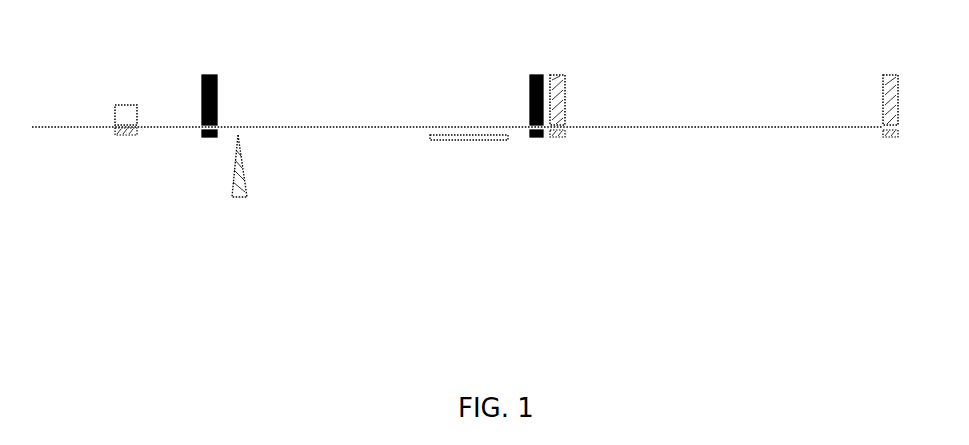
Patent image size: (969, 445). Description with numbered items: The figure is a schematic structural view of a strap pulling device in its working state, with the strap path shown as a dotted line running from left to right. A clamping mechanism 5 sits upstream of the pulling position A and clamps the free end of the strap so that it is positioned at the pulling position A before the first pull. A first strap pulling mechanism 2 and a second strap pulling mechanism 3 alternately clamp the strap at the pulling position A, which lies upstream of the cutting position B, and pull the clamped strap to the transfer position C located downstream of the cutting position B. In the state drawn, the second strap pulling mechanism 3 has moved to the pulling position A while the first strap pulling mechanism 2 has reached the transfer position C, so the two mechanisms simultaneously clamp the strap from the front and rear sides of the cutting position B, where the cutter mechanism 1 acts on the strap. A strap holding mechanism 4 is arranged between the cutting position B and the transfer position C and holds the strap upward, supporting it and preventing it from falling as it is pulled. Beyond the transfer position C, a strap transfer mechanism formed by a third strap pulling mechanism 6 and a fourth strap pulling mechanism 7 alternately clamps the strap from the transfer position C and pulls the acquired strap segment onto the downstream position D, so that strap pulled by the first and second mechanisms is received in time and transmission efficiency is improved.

The cutter mechanism 1 is at (232, 197).
The first strap pulling mechanism 2 is at (530, 82).
The second strap pulling mechanism 3 is at (212, 75).
The strap holding mechanism 4 is at (468, 140).
The clamping mechanism 5 is at (120, 114).
The third strap pulling mechanism 6 is at (558, 93).
The fourth strap pulling mechanism 7 is at (893, 100).
The pulling position A is at (203, 143).
The cutting position B is at (250, 137).
The transfer position C is at (537, 145).
The downstream position D is at (895, 145).